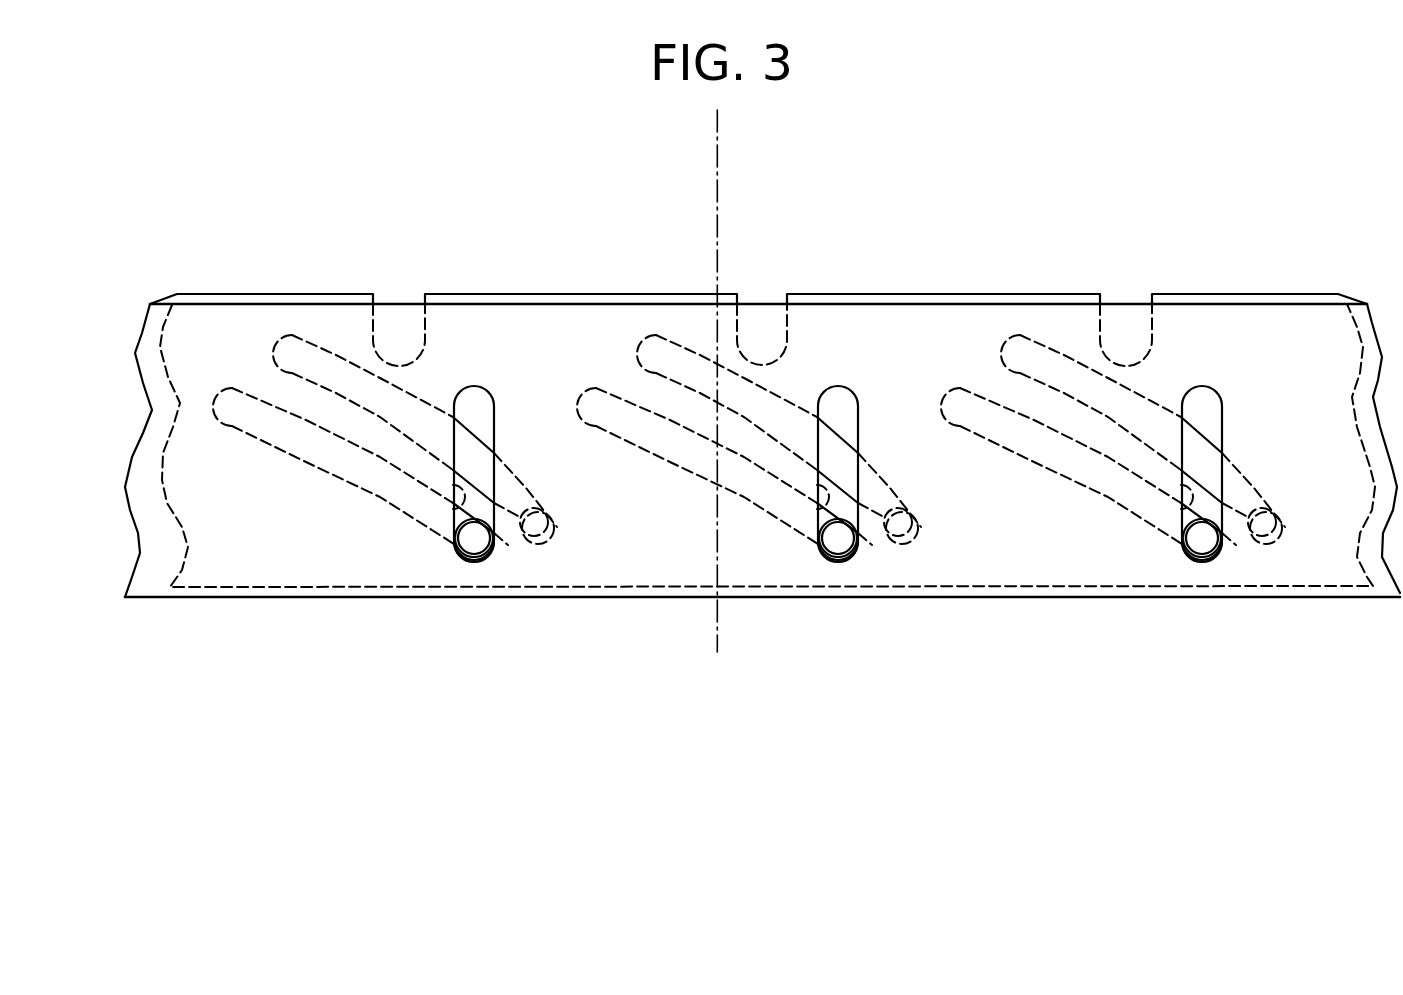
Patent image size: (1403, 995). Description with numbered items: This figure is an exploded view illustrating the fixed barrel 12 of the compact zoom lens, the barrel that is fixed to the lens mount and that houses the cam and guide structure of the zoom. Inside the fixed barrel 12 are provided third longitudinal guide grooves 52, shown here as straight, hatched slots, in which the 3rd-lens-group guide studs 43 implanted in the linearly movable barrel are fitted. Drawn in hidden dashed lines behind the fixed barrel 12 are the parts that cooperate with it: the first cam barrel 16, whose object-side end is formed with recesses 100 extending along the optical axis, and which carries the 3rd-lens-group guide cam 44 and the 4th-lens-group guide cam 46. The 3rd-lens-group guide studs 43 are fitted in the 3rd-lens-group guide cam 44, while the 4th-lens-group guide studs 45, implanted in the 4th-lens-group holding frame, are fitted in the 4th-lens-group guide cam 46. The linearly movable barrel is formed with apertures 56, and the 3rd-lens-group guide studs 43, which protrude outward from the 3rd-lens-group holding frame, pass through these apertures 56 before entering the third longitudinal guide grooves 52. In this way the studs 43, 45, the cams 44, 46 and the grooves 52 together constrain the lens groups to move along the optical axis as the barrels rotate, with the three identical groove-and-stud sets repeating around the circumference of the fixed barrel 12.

The recesses 100 is at (740, 325).
The fixed barrel 12 is at (152, 575).
The first cam barrel 16 is at (208, 547).
The third longitudinal guide grooves 52 is at (480, 512).
The 4th-lens-group guide cam 46 is at (751, 425).
The 3rd-lens-group guide cam 44 is at (778, 520).
The 3rd-lens-group guide studs 43 is at (838, 545).
The apertures 56 is at (849, 528).
The 4th-lens-group guide studs 45 is at (904, 550).